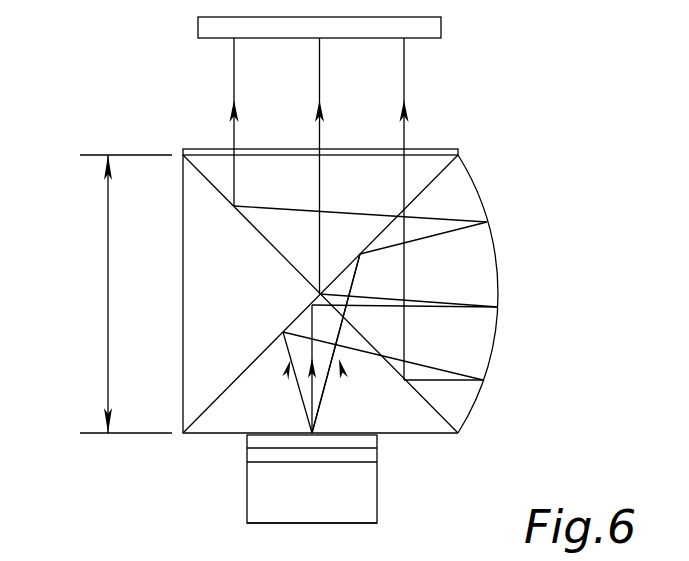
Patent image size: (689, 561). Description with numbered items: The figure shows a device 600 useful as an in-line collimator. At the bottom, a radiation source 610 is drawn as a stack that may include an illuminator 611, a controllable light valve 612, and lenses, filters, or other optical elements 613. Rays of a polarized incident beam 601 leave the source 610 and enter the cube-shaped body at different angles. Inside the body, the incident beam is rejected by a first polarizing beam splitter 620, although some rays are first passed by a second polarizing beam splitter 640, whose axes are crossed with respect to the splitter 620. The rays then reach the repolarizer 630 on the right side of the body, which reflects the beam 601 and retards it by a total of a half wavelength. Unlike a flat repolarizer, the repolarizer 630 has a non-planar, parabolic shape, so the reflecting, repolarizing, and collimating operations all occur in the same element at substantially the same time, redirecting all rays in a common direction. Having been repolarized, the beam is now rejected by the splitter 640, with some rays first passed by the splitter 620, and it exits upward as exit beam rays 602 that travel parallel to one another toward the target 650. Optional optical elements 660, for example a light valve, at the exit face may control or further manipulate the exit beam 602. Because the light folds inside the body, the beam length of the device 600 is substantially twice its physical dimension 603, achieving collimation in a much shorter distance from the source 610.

The device 600 is at (547, 120).
The polarized incident beam 601 is at (307, 408).
The exit beam rays 602 is at (405, 70).
The physical dimension 603 is at (105, 296).
The radiation source 610 is at (377, 467).
The illuminator 611 is at (247, 508).
The controllable light valve 612 is at (247, 455).
The optical elements 613 is at (247, 440).
The first polarizing beam splitter 620 is at (262, 351).
The repolarizer 630 is at (497, 262).
The second polarizing beam splitter 640 is at (278, 253).
The target 650 is at (198, 25).
The optional optical elements 660 is at (459, 154).